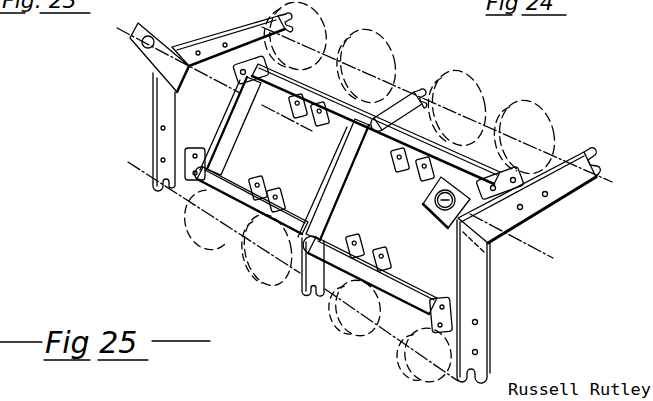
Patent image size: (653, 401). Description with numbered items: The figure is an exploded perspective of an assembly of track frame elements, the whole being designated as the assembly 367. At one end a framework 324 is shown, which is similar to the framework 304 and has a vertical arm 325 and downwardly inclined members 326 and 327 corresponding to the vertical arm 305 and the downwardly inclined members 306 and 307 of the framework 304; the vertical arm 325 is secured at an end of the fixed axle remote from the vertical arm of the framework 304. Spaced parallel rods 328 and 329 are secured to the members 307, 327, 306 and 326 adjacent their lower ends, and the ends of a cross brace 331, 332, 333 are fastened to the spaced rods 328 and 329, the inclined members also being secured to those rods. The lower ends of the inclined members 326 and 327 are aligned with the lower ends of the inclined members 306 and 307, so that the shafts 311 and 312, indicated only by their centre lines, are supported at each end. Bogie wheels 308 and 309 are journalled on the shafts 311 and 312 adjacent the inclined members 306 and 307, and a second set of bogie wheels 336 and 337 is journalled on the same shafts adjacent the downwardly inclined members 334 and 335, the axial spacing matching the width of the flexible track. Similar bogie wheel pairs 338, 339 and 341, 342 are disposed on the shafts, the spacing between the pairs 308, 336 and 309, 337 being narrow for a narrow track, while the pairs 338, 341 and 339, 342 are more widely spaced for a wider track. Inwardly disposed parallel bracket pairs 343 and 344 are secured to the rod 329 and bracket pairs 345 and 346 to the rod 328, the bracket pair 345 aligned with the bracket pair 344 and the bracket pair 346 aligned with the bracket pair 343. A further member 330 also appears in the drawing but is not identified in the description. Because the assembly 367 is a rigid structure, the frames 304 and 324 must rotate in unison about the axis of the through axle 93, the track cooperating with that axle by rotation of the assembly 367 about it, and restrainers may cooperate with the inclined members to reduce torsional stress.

The through axle 93 is at (524, 236).
The framework 304 is at (495, 265).
The vertical arm 305 is at (442, 223).
The downwardly inclined member 306 is at (488, 318).
The downwardly inclined member 307 is at (552, 196).
The bogie wheel 308 is at (414, 379).
The bogie wheel 309 is at (548, 113).
The shaft 311 is at (402, 342).
The shaft 312 is at (497, 130).
The framework 324 is at (162, 95).
The vertical arm 325 is at (184, 6).
The downwardly inclined member 326 is at (163, 110).
The downwardly inclined member 327 is at (236, 30).
The spaced parallel rod 328 is at (333, 85).
The spaced parallel rod 329 is at (248, 245).
The front rail 330 is at (318, 240).
The cross brace 331 is at (226, 140).
The cross brace 332 is at (337, 208).
The cross brace 333 is at (442, 250).
The downwardly inclined member 334 is at (312, 299).
The downwardly inclined member 335 is at (416, 91).
The bogie wheel 336 is at (334, 336).
The bogie wheel 337 is at (484, 66).
The bogie wheel 338 is at (242, 280).
The bogie wheel 339 is at (391, 25).
The bogie wheel 341 is at (184, 228).
The bogie wheel 342 is at (320, 15).
The bracket pair 343 is at (392, 233).
The bracket pair 344 is at (267, 178).
The bracket pair 345 is at (298, 118).
The bracket pair 346 is at (408, 172).
The assembly 367 is at (185, 210).